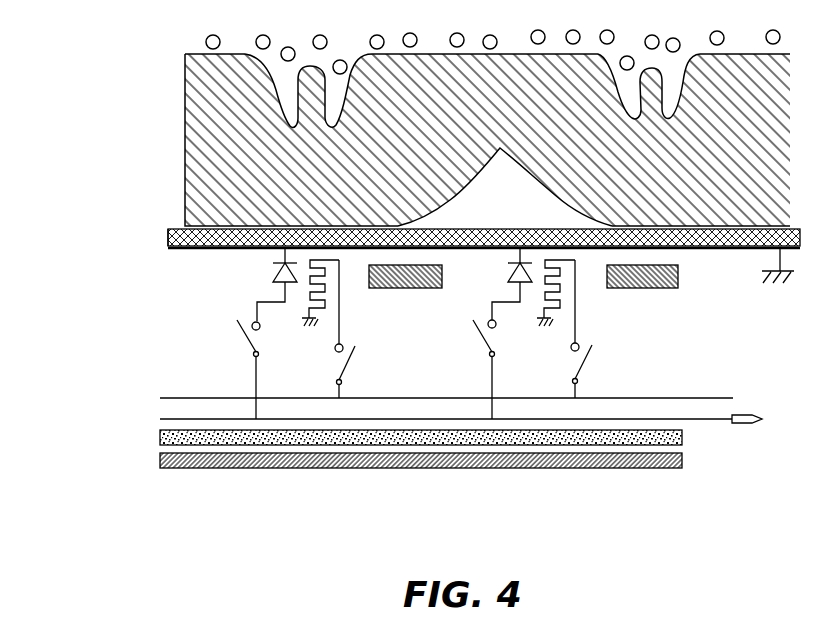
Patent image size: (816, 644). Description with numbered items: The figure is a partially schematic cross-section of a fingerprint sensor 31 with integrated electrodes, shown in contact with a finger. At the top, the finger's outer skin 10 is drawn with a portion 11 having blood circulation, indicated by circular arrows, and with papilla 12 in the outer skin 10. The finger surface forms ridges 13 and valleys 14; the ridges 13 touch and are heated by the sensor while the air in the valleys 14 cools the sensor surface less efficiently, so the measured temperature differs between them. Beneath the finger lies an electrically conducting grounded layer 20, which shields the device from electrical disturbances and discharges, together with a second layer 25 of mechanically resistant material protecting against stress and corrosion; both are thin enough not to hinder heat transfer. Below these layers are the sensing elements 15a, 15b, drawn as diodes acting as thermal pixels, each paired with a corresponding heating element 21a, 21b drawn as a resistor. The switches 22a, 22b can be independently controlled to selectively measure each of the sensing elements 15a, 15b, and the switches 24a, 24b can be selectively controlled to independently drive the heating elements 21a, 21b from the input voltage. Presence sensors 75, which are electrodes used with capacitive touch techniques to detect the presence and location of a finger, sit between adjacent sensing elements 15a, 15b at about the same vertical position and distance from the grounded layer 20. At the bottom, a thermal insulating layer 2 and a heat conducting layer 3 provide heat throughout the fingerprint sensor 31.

The thermal insulating layer 2 is at (684, 437).
The heat conducting layer 3 is at (684, 460).
The outer skin 10 is at (468, 128).
The portion having blood circulation 11 is at (193, 37).
The papilla 12 is at (337, 90).
The ridges 13 is at (317, 200).
The valleys 14 is at (487, 176).
The sensing element 15a is at (273, 262).
The sensing element 15b is at (508, 262).
The grounded layer 20 is at (690, 247).
The heating element 21a is at (306, 310).
The heating element 21b is at (541, 310).
The switch 22a is at (243, 338).
The switch 22b is at (480, 338).
The switch 24a is at (357, 363).
The switch 24b is at (593, 363).
The second layer 25 is at (168, 233).
The fingerprint sensor 31 is at (396, 335).
The presence sensor 75 is at (383, 289).